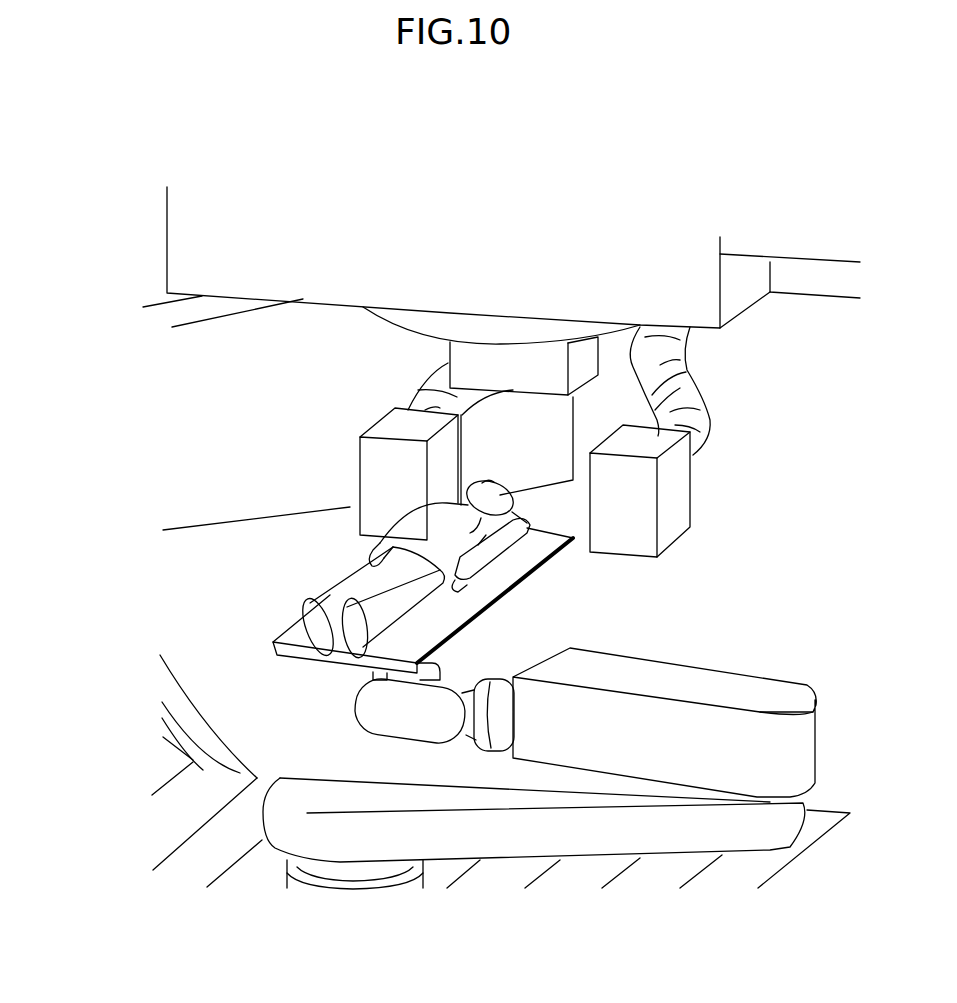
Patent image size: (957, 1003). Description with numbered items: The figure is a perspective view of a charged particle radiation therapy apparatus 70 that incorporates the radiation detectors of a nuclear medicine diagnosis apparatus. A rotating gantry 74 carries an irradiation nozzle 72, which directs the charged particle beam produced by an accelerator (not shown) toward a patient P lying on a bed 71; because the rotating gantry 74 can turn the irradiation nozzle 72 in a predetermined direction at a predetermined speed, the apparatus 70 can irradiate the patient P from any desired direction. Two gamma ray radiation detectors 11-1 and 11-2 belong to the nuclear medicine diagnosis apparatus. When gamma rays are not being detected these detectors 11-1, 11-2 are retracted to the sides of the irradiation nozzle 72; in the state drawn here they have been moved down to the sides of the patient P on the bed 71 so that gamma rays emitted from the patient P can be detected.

The charged particle radiation therapy apparatus 70 is at (73, 147).
The rotating gantry 74 is at (90, 262).
The irradiation nozzle 72 is at (465, 349).
The radiation detector 11-1 is at (373, 481).
The radiation detector 11-2 is at (643, 497).
The bed 71 is at (448, 617).
The patient P is at (500, 570).